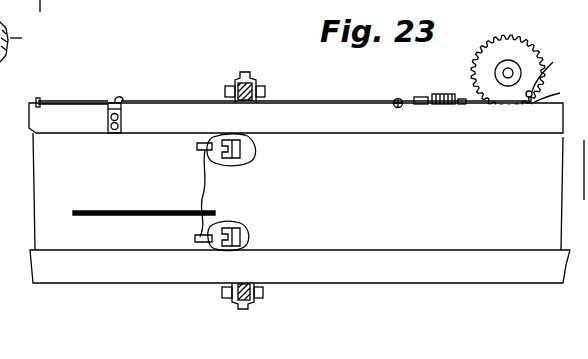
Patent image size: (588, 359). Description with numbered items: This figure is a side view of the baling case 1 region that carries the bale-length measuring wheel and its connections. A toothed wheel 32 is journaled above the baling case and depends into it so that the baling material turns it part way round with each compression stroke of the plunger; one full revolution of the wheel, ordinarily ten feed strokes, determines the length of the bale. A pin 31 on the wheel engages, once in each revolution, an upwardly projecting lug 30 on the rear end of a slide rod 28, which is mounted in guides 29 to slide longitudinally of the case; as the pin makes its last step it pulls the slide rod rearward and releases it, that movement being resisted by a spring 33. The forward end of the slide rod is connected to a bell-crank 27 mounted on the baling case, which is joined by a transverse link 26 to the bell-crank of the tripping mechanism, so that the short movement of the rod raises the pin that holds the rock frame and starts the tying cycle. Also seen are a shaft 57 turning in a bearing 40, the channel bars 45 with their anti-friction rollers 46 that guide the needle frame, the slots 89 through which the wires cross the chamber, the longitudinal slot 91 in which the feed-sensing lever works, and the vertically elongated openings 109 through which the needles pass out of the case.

The machine frame 1 is at (446, 202).
The transverse link 26 is at (41, 101).
The bell-crank 27 is at (82, 101).
The slide rod 28 is at (505, 106).
The guides 29 is at (420, 97).
The lug 30 is at (555, 100).
The pin 31 is at (553, 62).
The toothed wheel 32 is at (506, 50).
The spring 33 is at (441, 94).
The bearing 40 is at (232, 306).
The channel bars 45 is at (236, 86).
The anti-friction rollers 46 is at (258, 86).
The shaft 57 is at (27, 40).
The slots 89 is at (202, 193).
The longitudinal slot 91 is at (86, 211).
The vertically elongated openings 109 is at (240, 156).